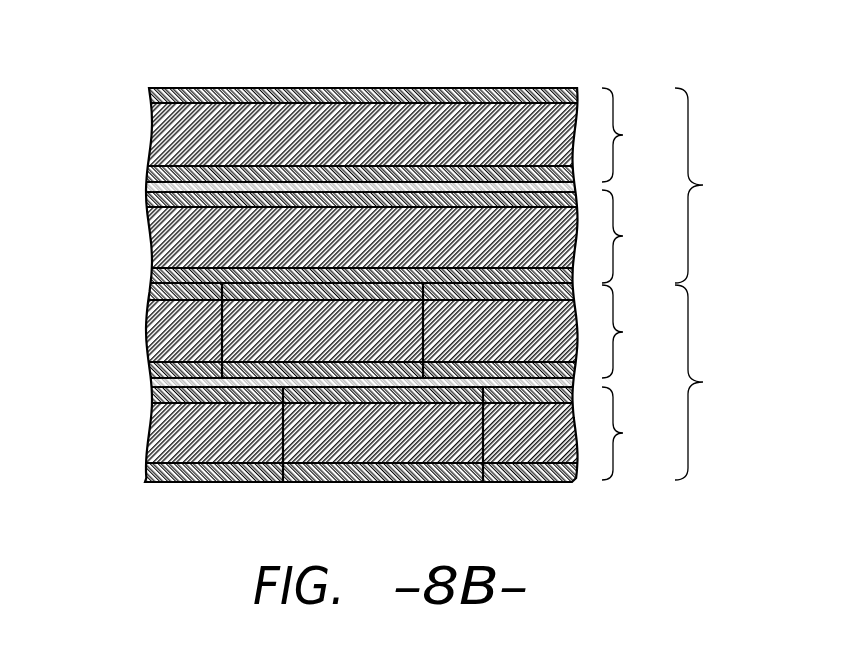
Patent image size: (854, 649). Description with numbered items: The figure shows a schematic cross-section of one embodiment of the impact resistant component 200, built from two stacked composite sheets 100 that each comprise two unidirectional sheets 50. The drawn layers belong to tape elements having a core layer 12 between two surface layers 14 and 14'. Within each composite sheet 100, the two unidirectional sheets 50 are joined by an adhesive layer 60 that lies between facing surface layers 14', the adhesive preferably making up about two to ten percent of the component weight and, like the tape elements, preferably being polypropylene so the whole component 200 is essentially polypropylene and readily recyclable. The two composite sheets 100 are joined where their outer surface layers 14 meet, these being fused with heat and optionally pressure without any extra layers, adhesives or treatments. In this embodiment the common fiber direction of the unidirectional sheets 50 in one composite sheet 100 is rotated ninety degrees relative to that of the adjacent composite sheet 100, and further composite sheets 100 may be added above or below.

The core layer 12 is at (148, 120).
The surface layer 14 is at (320, 283).
The surface layer 14' is at (316, 328).
The adhesive layer 60 is at (147, 188).
The unidirectional sheet 50 is at (634, 284).
The composite sheet 100 is at (715, 284).
The impact resistant component 200 is at (562, 56).